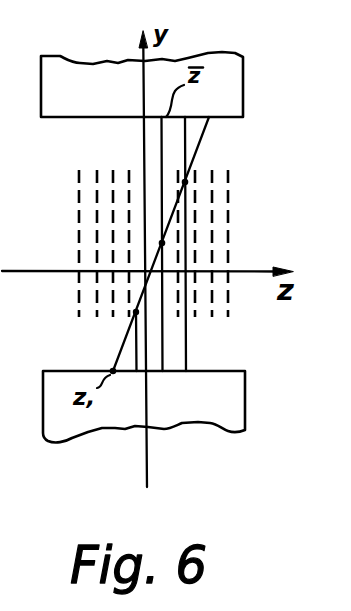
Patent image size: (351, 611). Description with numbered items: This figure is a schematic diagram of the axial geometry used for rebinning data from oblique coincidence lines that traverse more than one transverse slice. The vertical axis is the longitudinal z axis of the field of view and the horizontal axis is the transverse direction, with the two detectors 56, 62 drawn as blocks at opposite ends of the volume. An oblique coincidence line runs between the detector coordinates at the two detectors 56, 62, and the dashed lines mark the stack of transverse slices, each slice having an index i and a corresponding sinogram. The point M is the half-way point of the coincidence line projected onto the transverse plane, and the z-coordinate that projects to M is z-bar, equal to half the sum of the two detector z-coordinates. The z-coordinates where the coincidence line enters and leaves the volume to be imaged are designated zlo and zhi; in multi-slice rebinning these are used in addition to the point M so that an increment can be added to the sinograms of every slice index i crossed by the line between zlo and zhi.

The detector 56 is at (231, 87).
The detector 62 is at (234, 398).
The z-coordinate where coincidence line leaves imaged volume zhi is at (191, 372).
The z-coordinate where coincidence line enters imaged volume zlo is at (137, 372).
The slice index i is at (183, 182).
The half-way point on projected line M is at (164, 243).